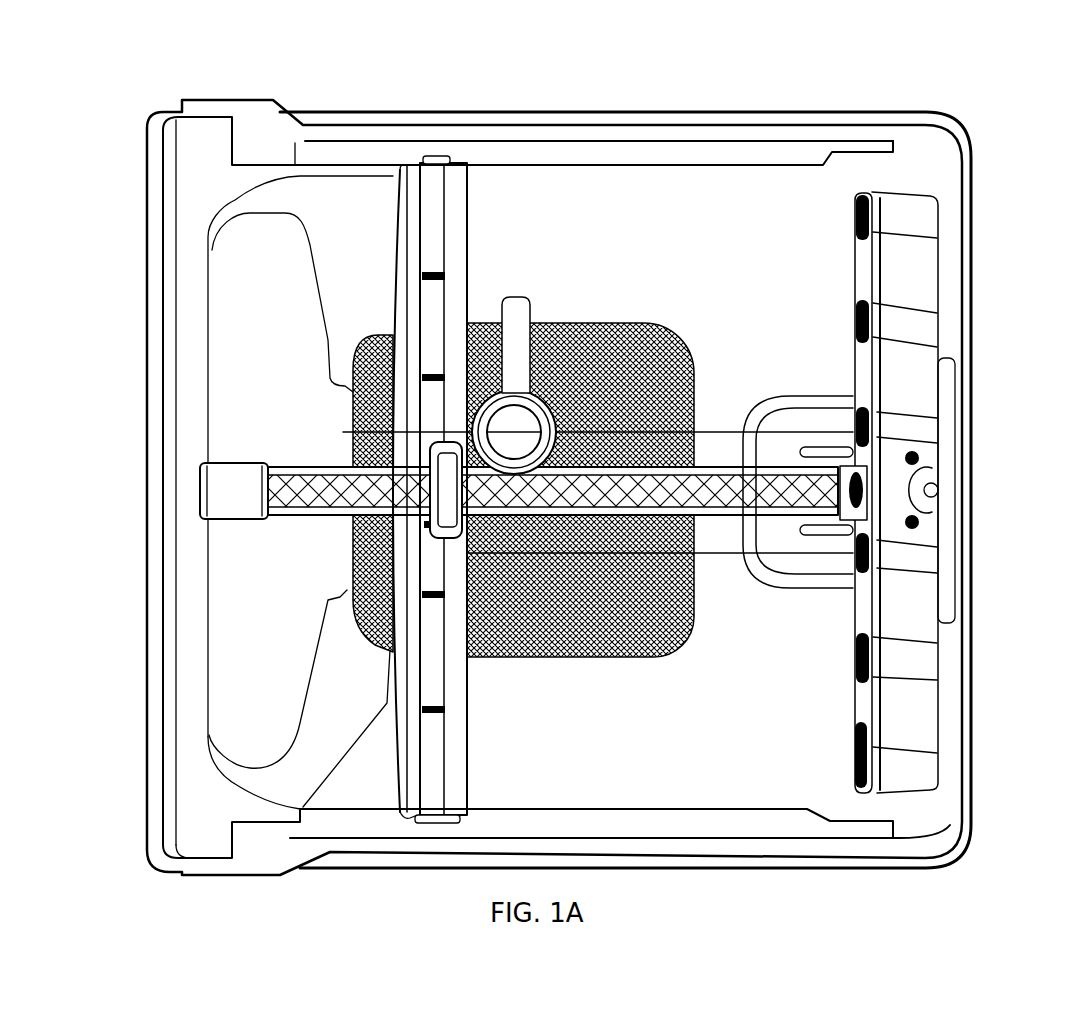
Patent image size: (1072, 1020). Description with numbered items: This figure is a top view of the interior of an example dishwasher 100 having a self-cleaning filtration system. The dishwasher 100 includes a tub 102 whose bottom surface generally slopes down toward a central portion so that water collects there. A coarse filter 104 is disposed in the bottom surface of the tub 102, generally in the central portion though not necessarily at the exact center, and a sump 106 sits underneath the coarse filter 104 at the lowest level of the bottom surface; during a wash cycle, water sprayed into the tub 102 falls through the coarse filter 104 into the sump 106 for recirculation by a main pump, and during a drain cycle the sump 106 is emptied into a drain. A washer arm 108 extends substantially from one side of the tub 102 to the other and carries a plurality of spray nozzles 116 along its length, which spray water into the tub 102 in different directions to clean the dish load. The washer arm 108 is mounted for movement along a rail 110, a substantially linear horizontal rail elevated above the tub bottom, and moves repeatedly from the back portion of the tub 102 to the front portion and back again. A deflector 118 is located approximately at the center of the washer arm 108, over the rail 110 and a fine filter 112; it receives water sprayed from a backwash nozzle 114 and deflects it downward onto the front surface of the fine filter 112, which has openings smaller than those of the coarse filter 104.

The dishwasher 100 is at (78, 149).
The tub 102 is at (745, 280).
The coarse filter 104 is at (633, 320).
The sump 106 is at (593, 660).
The washer arm 108 is at (463, 762).
The rail 110 is at (713, 465).
The fine filter 112 is at (710, 490).
The backwash nozzle 114 is at (873, 487).
The spray nozzles 116 is at (447, 277).
The deflector 118 is at (418, 452).